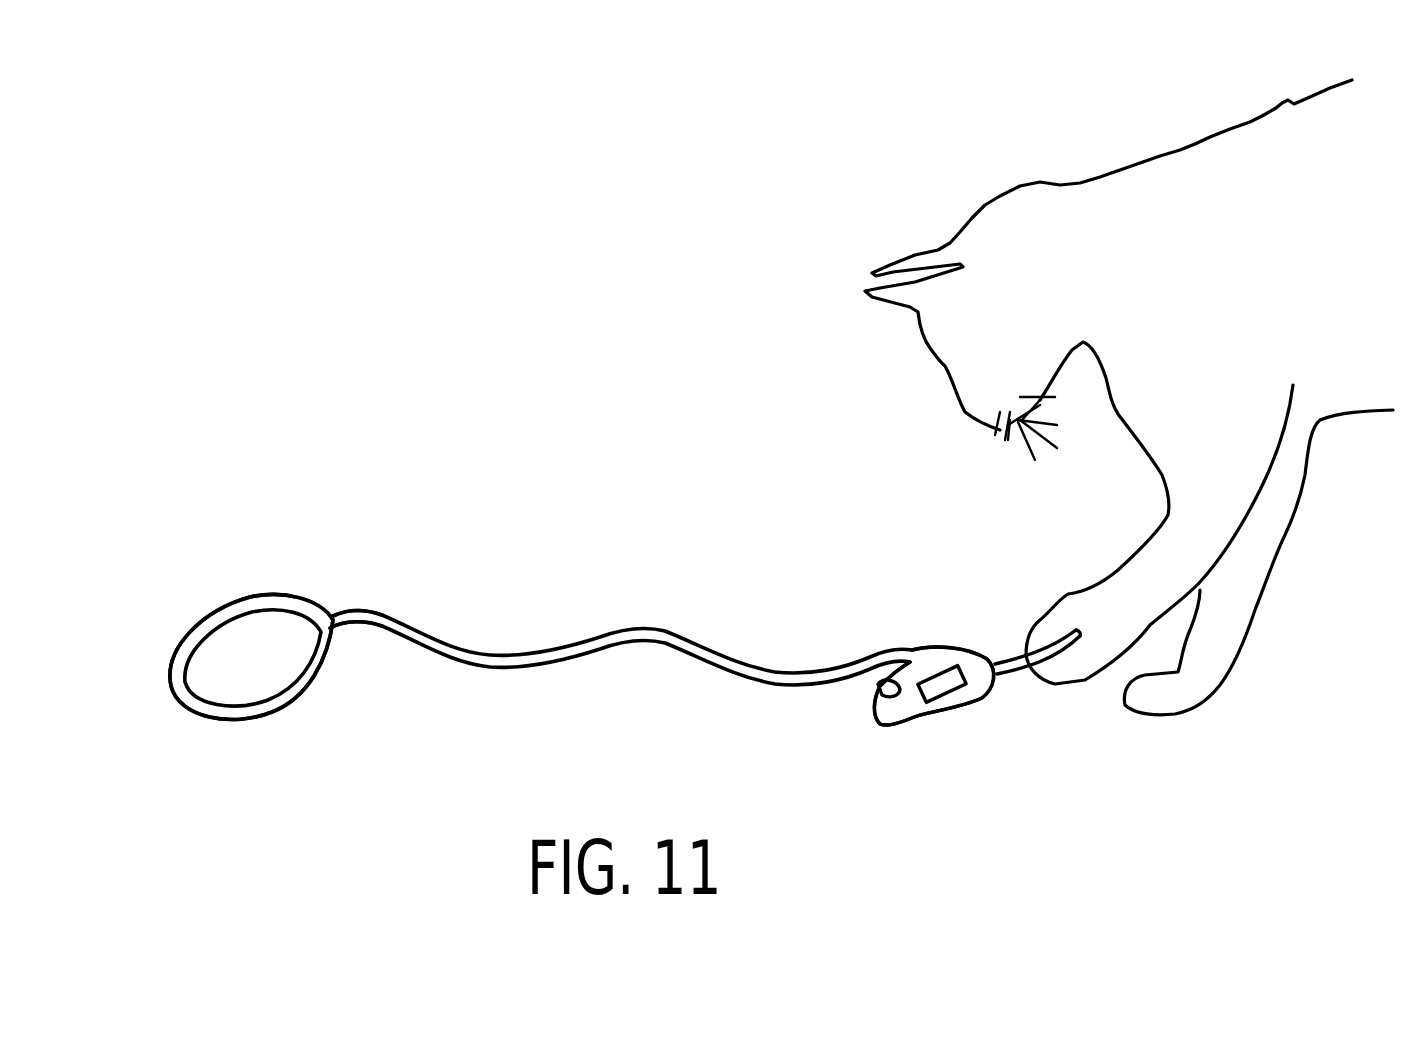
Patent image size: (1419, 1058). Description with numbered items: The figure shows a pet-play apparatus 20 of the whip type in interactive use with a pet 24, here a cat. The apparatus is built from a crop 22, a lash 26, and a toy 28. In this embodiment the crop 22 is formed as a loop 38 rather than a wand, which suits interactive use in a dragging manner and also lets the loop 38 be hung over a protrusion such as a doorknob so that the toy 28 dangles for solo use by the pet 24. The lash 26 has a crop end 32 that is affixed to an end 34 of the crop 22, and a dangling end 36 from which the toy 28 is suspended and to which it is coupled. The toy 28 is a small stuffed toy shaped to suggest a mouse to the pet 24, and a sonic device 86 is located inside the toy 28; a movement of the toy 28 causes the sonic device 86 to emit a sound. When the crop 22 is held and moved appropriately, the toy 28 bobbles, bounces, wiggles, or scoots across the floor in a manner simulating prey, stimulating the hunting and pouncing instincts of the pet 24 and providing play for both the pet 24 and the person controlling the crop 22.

The pet-play apparatus 20 is at (790, 405).
The crop 22 is at (213, 710).
The pet 24 is at (1213, 152).
The lash 26 is at (500, 655).
The toy 28 is at (897, 722).
The crop end 32 is at (335, 570).
The end of crop 34 is at (285, 560).
The dangling end 36 is at (925, 605).
The loop 38 is at (302, 685).
The sonic device 86 is at (958, 698).